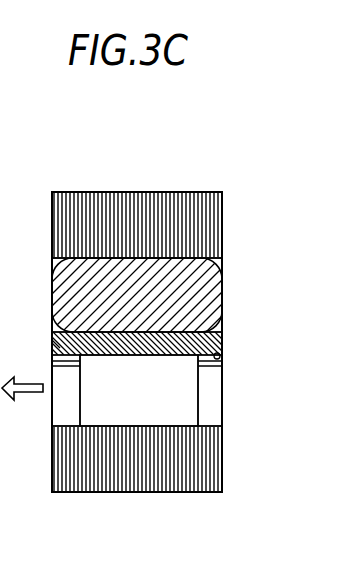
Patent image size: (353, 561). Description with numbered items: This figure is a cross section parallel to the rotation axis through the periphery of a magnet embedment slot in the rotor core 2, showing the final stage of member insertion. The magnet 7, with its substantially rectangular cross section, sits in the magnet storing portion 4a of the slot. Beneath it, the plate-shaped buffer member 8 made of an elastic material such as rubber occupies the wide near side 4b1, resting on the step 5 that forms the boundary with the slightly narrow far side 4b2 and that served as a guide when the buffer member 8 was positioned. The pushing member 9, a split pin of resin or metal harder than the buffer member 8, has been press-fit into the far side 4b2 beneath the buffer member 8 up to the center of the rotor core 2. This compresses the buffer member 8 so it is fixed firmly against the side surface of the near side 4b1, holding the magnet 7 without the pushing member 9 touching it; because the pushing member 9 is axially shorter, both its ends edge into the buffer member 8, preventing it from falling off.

The rotor core 2 is at (56, 214).
The magnet 7 is at (52, 270).
The magnet storing portion 4a is at (222, 272).
The buffer member 8 is at (58, 345).
The near side 4b1 is at (222, 345).
The step 5 is at (221, 357).
The far side 4b2 is at (222, 395).
The pushing member 9 is at (190, 418).